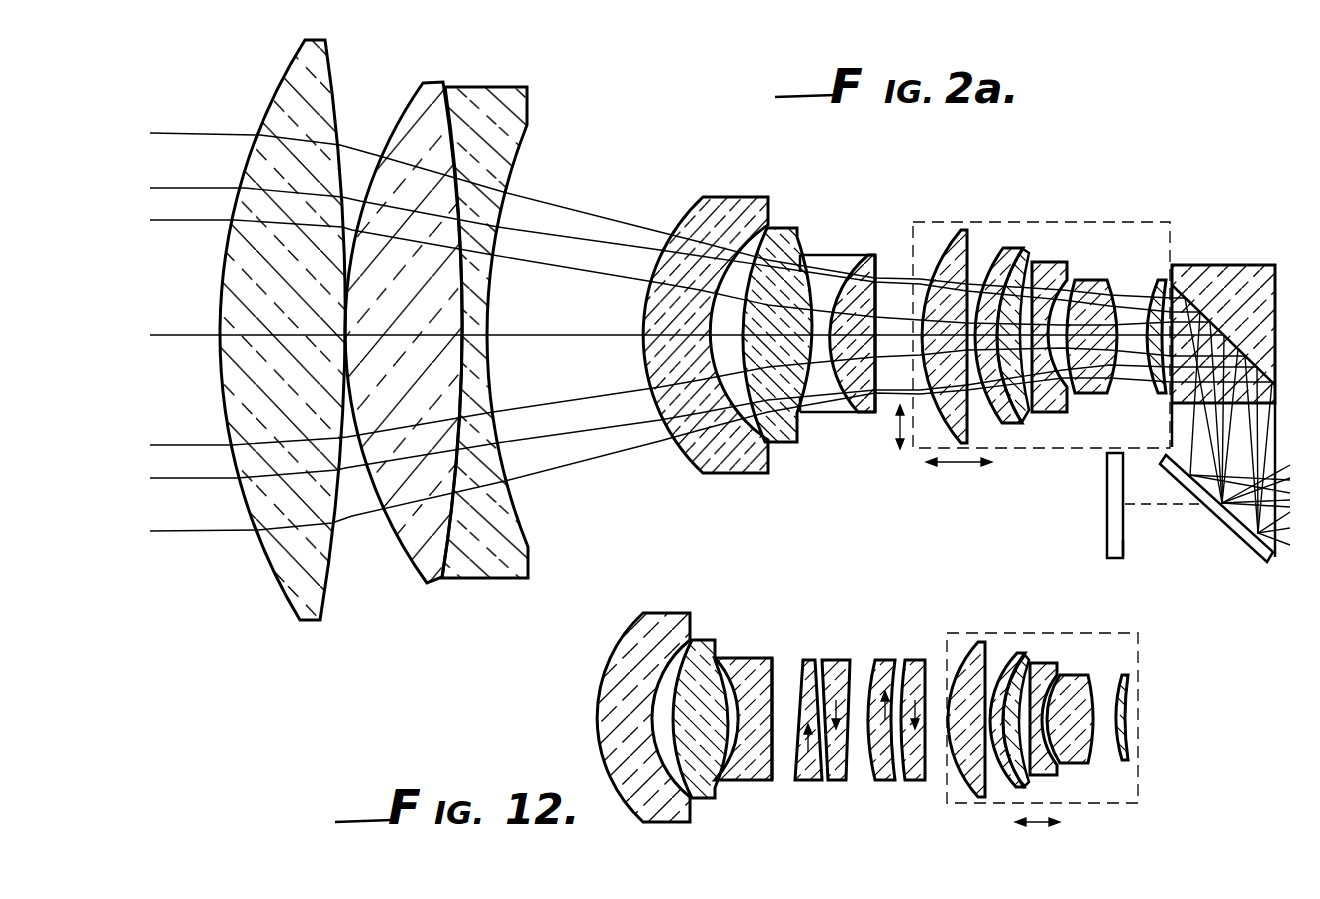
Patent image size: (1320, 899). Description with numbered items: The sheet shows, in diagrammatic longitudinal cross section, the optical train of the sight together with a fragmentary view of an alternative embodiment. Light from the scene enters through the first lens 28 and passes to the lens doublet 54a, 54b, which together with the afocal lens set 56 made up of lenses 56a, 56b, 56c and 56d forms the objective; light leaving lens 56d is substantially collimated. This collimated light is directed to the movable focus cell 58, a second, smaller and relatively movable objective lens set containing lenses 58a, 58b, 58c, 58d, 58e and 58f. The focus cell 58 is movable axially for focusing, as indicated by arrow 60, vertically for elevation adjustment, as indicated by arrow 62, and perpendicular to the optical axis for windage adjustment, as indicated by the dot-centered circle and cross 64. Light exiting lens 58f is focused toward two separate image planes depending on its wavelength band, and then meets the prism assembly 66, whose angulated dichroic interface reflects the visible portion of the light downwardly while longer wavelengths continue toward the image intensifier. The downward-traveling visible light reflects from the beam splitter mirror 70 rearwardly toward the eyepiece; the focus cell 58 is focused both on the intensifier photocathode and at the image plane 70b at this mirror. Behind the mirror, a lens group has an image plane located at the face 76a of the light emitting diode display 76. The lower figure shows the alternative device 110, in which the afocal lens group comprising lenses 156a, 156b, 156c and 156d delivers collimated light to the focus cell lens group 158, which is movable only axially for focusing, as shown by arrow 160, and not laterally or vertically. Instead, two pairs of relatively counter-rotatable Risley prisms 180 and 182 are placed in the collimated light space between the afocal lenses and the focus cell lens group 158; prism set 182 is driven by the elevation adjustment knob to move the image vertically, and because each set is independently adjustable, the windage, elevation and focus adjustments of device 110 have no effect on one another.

In FIG. 2A, the first lens 28 is at (300, 62).
In FIG. 2A, the lens doublet lens 54a is at (420, 95).
In FIG. 2A, the lens doublet lens 54b is at (505, 88).
In FIG. 2A, the afocal lens set 56 is at (797, 347).
In FIG. 2A, the afocal lens set lens 56a is at (733, 197).
In FIG. 2A, the afocal lens set lens 56b is at (795, 232).
In FIG. 2A, the afocal lens set lens 56c is at (828, 256).
In FIG. 2A, the afocal lens set lens 56d is at (878, 262).
In FIG. 2A, the focus cell 58 is at (1100, 222).
In FIG. 2A, the focus cell lens 58a is at (963, 232).
In FIG. 2A, the focus cell lens 58b is at (1015, 248).
In FIG. 2A, the focus cell lens 58c is at (1032, 412).
In FIG. 2A, the focus cell lens 58d is at (1063, 268).
In FIG. 2A, the focus cell lens 58e is at (1088, 286).
In FIG. 2A, the focus cell lens 58f is at (1164, 278).
In FIG. 2A, the axial movement arrow 60 is at (958, 462).
In FIG. 2A, the vertical movement arrow 62 is at (897, 427).
In FIG. 2A, the windage movement arrow 64 is at (905, 510).
In FIG. 2A, the prism assembly 66 is at (1243, 268).
In FIG. 2A, the beam splitter mirror 70 is at (1262, 548).
In FIG. 2A, the image plane 70b is at (1145, 504).
In FIG. 2A, the light emitting diode (LED) display 76 is at (1107, 478).
In FIG. 2A, the face of LED display 76a is at (1123, 540).
In FIG. 12, the device 110 is at (681, 590).
In FIG. 12, the afocal lens group lens 156a is at (657, 822).
In FIG. 12, the afocal lens group lens 156b is at (705, 800).
In FIG. 12, the afocal lens group lens 156c is at (742, 780).
In FIG. 12, the afocal lens group lens 156d is at (772, 770).
In FIG. 12, the focus cell lens group 158 is at (992, 633).
In FIG. 12, the axial movement arrow 160 is at (1030, 822).
In FIG. 12, the Risley prism pair 180 is at (827, 640).
In FIG. 12, the Risley prism pair 182 is at (900, 644).